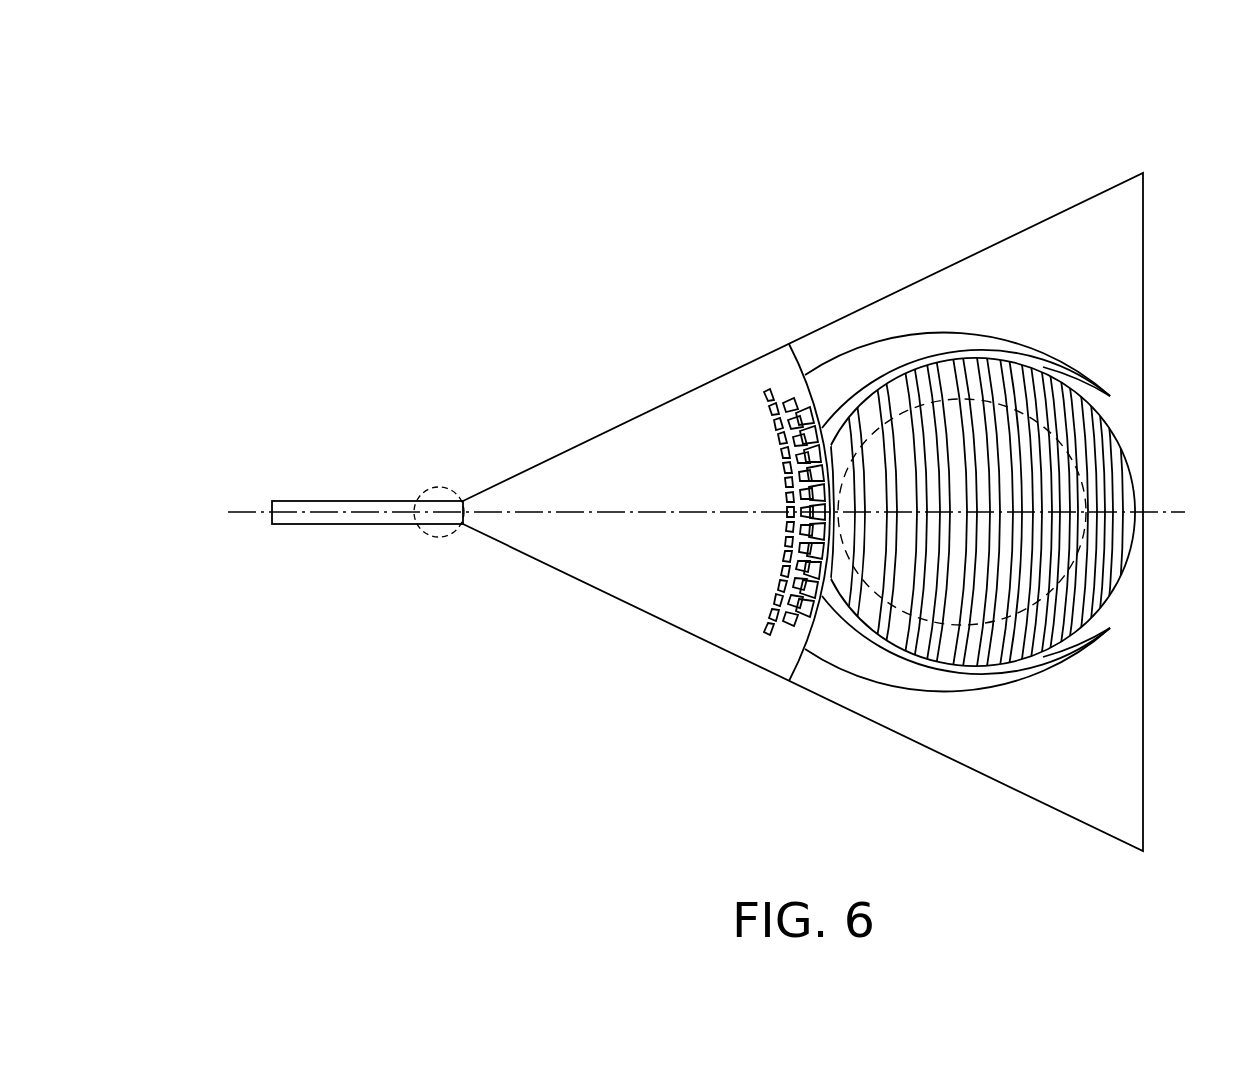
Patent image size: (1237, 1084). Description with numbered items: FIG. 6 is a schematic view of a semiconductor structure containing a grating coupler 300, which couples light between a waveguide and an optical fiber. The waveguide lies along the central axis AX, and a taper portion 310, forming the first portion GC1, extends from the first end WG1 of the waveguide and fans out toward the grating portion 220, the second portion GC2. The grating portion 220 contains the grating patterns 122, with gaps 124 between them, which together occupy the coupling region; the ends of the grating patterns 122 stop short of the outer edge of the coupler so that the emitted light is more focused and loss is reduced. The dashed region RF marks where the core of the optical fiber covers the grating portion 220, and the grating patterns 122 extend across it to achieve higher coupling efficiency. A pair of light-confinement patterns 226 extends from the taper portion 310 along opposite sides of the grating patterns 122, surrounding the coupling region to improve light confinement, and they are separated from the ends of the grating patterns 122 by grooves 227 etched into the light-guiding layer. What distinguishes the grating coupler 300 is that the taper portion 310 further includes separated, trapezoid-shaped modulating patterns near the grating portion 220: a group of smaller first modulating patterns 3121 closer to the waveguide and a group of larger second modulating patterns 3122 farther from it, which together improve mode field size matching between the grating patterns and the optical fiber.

The grating coupler 300 is at (833, 453).
The grating portion 220 is at (958, 500).
The light-confinement patterns 226 is at (889, 356).
The grooves 227 is at (848, 405).
The taper portion 310 is at (803, 512).
The first modulating patterns 3121 is at (777, 628).
The second modulating patterns 3122 is at (810, 620).
The grating patterns 122 is at (927, 640).
The gaps 124 is at (1055, 632).
The central axis AX is at (243, 512).
The first end of the waveguide WG1 is at (442, 487).
The region covered by a core of the optical fiber RF is at (1131, 447).